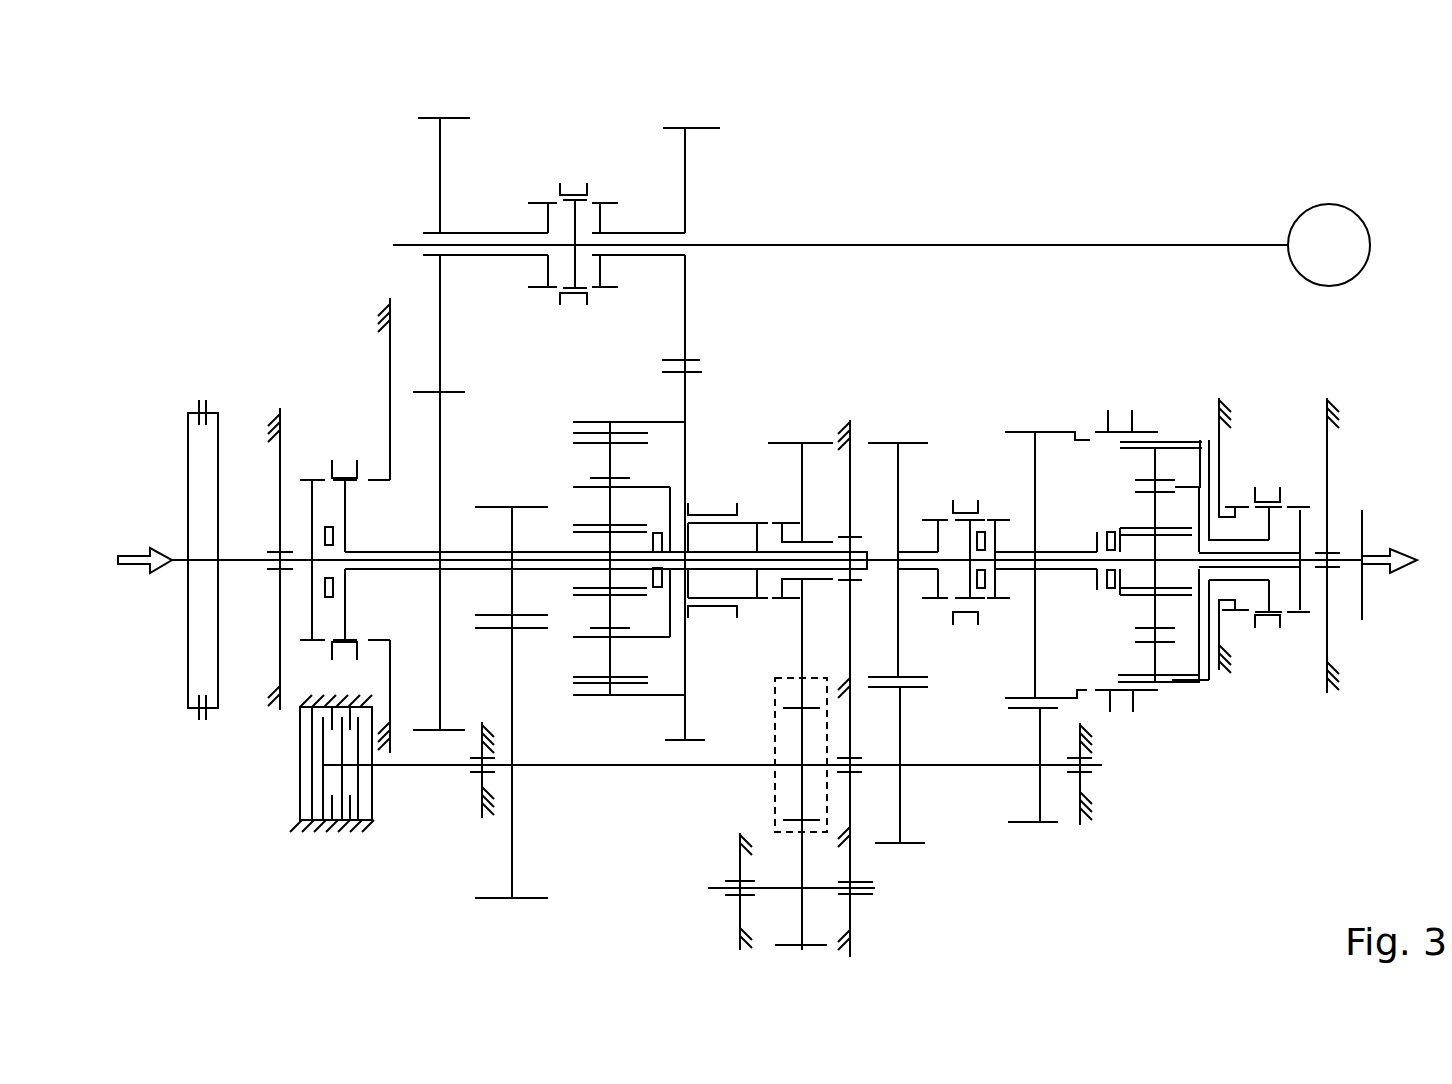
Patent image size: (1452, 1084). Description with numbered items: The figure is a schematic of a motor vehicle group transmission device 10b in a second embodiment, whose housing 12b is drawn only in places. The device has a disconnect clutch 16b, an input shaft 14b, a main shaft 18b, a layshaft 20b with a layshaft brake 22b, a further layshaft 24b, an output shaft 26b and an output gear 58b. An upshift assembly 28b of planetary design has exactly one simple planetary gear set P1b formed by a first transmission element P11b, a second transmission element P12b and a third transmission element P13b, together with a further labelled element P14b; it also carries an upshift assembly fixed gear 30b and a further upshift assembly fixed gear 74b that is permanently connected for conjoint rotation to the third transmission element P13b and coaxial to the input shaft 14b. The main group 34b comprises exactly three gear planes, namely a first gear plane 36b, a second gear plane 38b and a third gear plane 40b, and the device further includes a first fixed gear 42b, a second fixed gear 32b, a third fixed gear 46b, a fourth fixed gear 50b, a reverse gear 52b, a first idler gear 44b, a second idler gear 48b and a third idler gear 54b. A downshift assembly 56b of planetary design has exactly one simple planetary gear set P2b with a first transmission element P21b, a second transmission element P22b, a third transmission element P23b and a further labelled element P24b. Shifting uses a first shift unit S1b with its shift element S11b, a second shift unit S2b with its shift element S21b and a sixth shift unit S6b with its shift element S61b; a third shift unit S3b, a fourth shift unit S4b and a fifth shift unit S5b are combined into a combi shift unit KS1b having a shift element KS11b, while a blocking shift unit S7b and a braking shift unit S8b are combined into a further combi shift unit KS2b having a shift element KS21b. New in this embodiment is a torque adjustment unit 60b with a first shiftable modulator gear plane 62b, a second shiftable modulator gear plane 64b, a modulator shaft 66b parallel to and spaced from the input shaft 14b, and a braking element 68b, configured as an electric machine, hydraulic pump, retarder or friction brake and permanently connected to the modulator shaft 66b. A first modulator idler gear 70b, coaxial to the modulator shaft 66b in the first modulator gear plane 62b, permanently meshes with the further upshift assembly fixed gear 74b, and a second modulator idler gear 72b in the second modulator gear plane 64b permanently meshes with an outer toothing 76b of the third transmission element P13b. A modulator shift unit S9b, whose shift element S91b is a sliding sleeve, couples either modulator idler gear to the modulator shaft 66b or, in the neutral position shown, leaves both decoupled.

The group transmission device 10b is at (238, 188).
The housing 12b is at (388, 330).
The input shaft 14b is at (255, 548).
The disconnect clutch 16b is at (193, 404).
The main shaft 18b is at (878, 548).
The layshaft 20b is at (424, 768).
The layshaft brake 22b is at (281, 799).
The further layshaft 24b is at (758, 895).
The output shaft 26b is at (1349, 568).
The upshift assembly 28b is at (564, 391).
The upshift assembly fixed gear 30b is at (495, 506).
The second fixed gear 32b is at (476, 897).
The main group 34b is at (968, 385).
The first gear plane 36b is at (1034, 426).
The second gear plane 38b is at (899, 431).
The third gear plane 40b is at (802, 435).
The first fixed gear 42b is at (1045, 824).
The first idler gear 44b is at (1120, 401).
The third fixed gear 46b is at (895, 845).
The second idler gear 48b is at (880, 442).
The fourth fixed gear 50b is at (775, 800).
The reverse gear 52b is at (790, 948).
The third idler gear 54b is at (817, 443).
The downshift assembly 56b is at (1194, 423).
The output gear 58b is at (1350, 562).
The torque adjustment unit 60b is at (860, 106).
The first shiftable modulator gear plane 62b is at (441, 110).
The second shiftable modulator gear plane 64b is at (687, 116).
The modulator shaft 66b is at (1153, 244).
The braking element 68b is at (1328, 204).
The first modulator idler gear 70b is at (420, 118).
The second modulator idler gear 72b is at (722, 128).
The further upshift assembly fixed gear 74b is at (430, 390).
The outer toothing 76b is at (664, 360).
The first shift unit S1b is at (967, 637).
The second shift unit S2b is at (1119, 406).
The third shift unit S3b is at (743, 502).
The fourth shift unit S4b is at (762, 508).
The fifth shift unit S5b is at (783, 508).
The sixth shift unit S6b is at (350, 440).
The blocking shift unit S7b is at (1294, 474).
The braking shift unit S8b is at (1243, 476).
The modulator shift unit S9b is at (576, 156).
The shift element S11b is at (950, 628).
The shift element S21b is at (1110, 714).
The shift element S61b is at (343, 448).
The shift element S91b is at (566, 186).
The combi shift unit KS1b is at (755, 485).
The further combi shift unit KS2b is at (1267, 466).
The shift element KS11b is at (718, 622).
The shift element KS21b is at (1265, 629).
The simple planetary gear set P1b is at (608, 706).
The simple planetary gear set P2b is at (1158, 710).
The first transmission element P11b is at (606, 545).
The second transmission element P12b is at (663, 480).
The third transmission element P13b is at (652, 697).
The planet carrier P14b is at (605, 658).
The first transmission element P21b is at (1165, 575).
The second transmission element P22b is at (1187, 440).
The third transmission element P23b is at (1168, 687).
The planet carrier P24b is at (1157, 655).